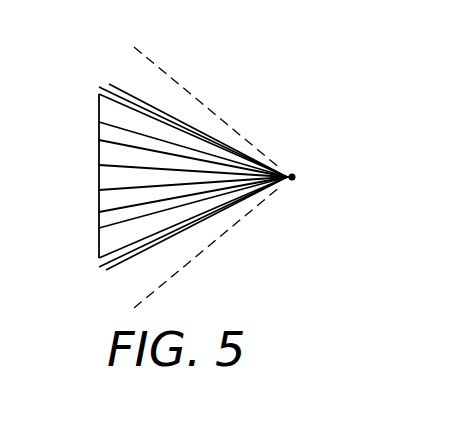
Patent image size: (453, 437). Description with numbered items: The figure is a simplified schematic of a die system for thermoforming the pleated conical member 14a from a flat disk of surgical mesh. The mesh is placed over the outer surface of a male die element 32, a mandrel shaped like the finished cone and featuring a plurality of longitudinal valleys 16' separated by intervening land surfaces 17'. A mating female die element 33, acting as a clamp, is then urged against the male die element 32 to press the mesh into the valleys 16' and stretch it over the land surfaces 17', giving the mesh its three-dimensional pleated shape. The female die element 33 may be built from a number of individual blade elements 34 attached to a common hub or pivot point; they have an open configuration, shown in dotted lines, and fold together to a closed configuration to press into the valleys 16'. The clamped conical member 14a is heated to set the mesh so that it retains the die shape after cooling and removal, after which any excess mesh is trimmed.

The conical member 14a is at (109, 84).
The longitudinal valleys 16' is at (157, 144).
The land surfaces 17' is at (165, 207).
The male die element 32 is at (98, 173).
The female die element 33 is at (220, 115).
The blade elements 34 is at (250, 200).